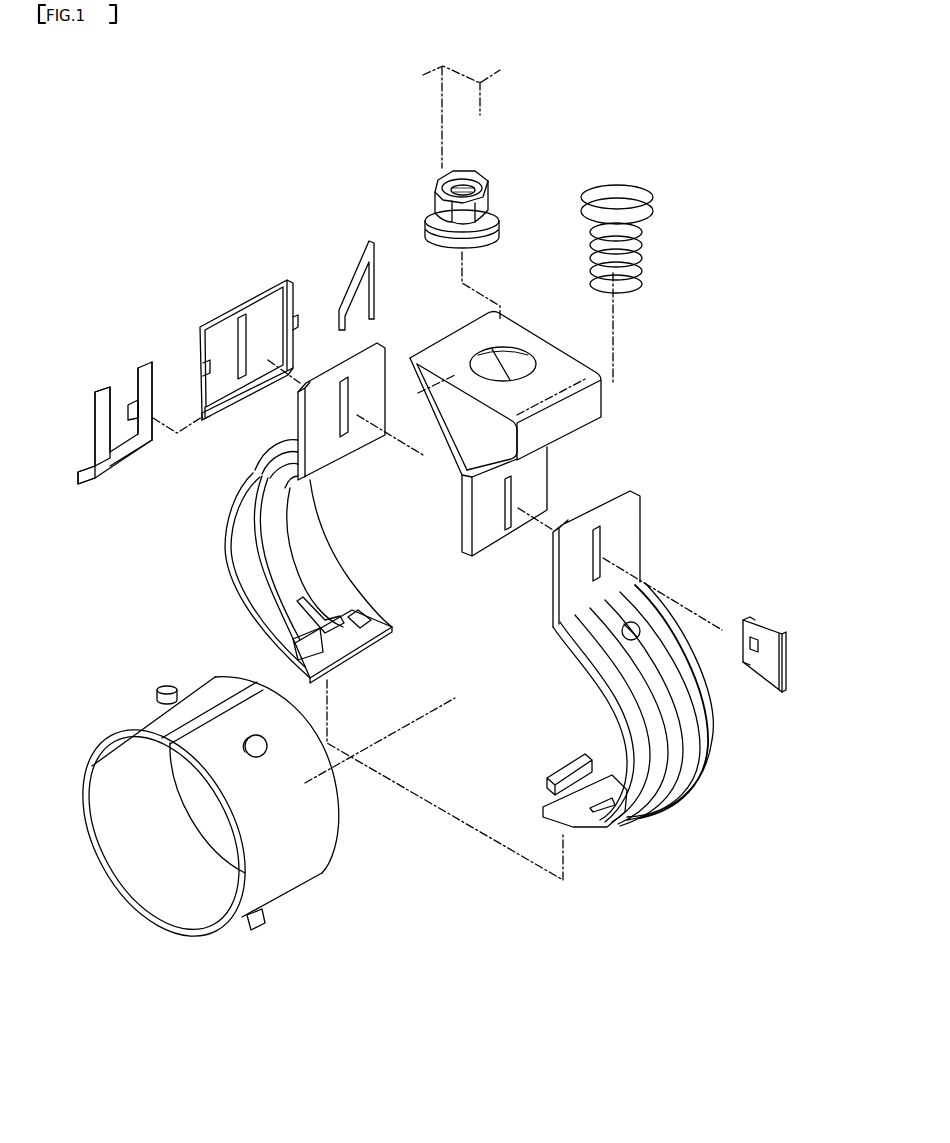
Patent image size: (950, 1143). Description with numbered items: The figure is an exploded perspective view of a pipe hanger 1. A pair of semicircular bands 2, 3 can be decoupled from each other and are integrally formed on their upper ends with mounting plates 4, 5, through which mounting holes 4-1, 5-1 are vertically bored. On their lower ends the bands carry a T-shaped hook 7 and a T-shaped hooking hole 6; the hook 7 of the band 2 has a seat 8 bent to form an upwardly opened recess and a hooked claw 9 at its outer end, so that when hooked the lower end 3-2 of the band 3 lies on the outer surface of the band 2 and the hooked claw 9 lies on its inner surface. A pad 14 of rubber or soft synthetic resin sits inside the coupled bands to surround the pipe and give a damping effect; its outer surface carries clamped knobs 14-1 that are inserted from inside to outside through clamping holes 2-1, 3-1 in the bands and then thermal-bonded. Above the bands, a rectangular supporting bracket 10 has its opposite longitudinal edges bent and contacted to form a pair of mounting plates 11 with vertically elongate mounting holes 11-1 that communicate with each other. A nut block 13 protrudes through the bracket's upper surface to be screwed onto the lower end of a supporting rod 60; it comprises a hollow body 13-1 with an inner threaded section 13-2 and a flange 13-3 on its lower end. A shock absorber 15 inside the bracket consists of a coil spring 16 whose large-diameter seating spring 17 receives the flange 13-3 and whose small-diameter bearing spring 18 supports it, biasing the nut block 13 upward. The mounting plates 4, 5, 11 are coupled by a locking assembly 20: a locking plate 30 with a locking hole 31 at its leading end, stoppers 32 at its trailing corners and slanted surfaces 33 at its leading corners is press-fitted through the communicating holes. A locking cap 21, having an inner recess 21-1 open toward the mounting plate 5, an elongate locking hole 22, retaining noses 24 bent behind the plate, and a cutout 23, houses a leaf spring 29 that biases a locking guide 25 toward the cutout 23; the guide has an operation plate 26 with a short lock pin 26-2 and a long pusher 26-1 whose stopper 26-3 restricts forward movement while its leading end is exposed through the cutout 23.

The pipe hanger 1 is at (326, 88).
The supporting rod 60 is at (482, 117).
The shock absorber 15 is at (608, 205).
The nut block 13 is at (515, 182).
The hollow body 13-1 is at (486, 193).
The threaded section 13-2 is at (477, 178).
The flange 13-3 is at (497, 206).
The coil spring 16 is at (658, 236).
The large-diameter seating spring 17 is at (643, 193).
The small-diameter bearing spring 18 is at (643, 258).
The supporting bracket 10 is at (594, 405).
The mounting plates 11 is at (480, 514).
The elongate mounting holes 11-1 is at (515, 522).
The locking assembly 20 is at (276, 246).
The locking cap 21 is at (256, 355).
The elongate locking hole 22 is at (246, 316).
The retaining noses 24 is at (297, 320).
The inner recess 21-1 is at (281, 356).
The cutout 23 is at (205, 416).
The locking guide 25 is at (94, 434).
The operation plate 26 is at (150, 363).
The long pusher 26-1 is at (72, 486).
The short lock pin 26-2 is at (130, 403).
The stopper 26-3 is at (95, 425).
The leaf spring 29 is at (354, 270).
The semicircular band 3 is at (235, 575).
The clamping hole 3-1 is at (297, 437).
The lower end 3-2 is at (372, 637).
The mounting plate 5 is at (342, 404).
The mounting hole 5-1 is at (347, 392).
The hooking hole 6 is at (330, 637).
The semicircular band 2 is at (597, 830).
The clamping hole 2-1 is at (628, 645).
The mounting plate 4 is at (625, 541).
The mounting hole 4-1 is at (600, 553).
The hook 7 is at (549, 790).
The seat 8 is at (550, 797).
The hooked claw 9 is at (540, 777).
The locking plate 30 is at (770, 665).
The locking hole 31 is at (750, 642).
The stoppers 32 is at (784, 694).
The slanted surfaces 33 is at (745, 661).
The pad 14 is at (323, 875).
The clamped knobs 14-1 is at (166, 686).